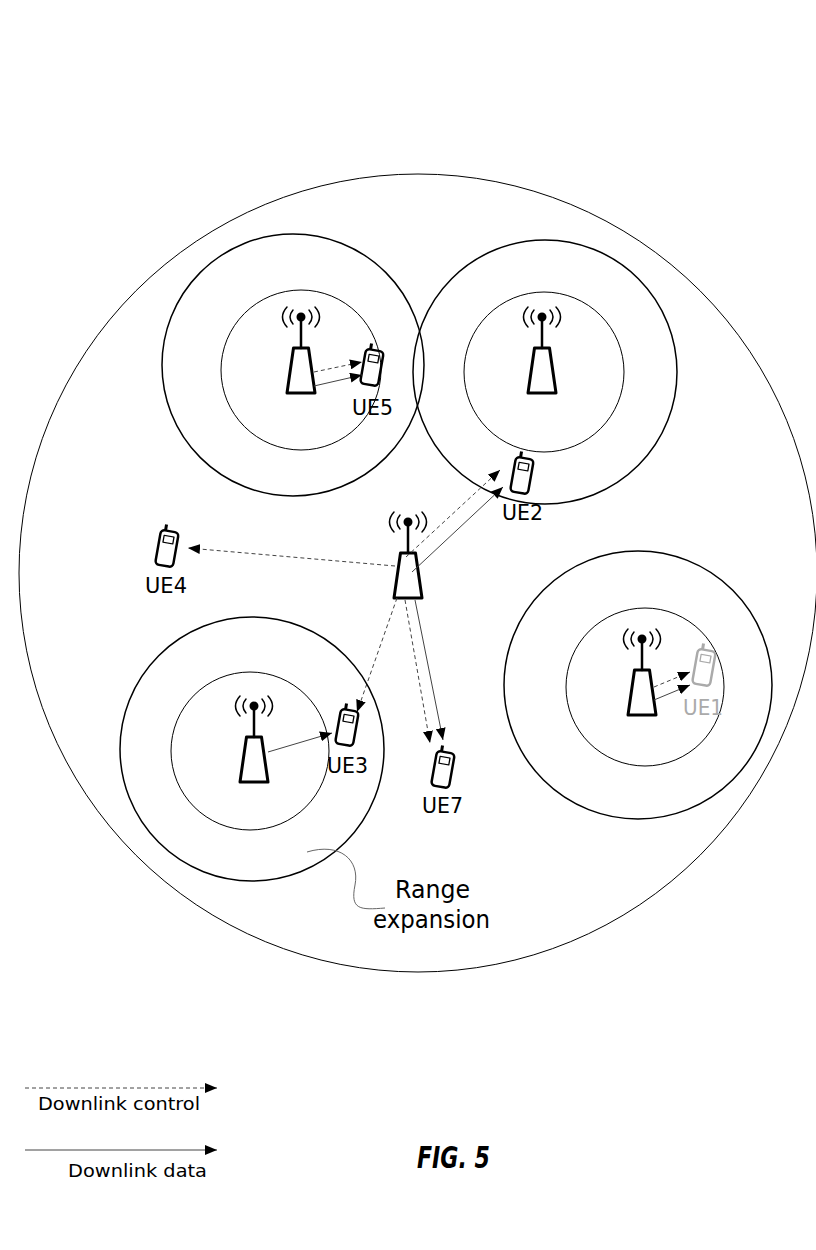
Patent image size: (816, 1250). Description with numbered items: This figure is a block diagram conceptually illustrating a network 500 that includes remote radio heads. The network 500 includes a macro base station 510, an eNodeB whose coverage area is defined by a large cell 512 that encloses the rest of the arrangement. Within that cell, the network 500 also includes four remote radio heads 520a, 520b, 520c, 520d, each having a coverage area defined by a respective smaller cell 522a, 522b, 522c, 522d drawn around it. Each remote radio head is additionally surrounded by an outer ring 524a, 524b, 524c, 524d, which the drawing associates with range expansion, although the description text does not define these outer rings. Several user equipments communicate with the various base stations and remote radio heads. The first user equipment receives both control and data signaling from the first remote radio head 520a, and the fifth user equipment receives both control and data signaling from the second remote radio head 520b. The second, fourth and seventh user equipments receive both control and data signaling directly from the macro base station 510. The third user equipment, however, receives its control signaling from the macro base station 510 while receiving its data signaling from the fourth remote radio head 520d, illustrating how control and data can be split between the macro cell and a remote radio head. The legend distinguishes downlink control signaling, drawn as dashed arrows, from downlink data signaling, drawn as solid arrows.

The network 500 is at (218, 77).
The cell 512 is at (297, 193).
The macro base station 510 is at (427, 580).
The remote radio head 520a is at (630, 700).
The remote radio head 520b is at (288, 377).
The remote radio head 520c is at (528, 375).
The remote radio head 520d is at (240, 767).
The cell 522a is at (608, 612).
The cell 522b is at (248, 303).
The cell 522c is at (517, 297).
The cell 522d is at (223, 673).
The RRH1 range expansion area 524a is at (737, 587).
The RRH2 range expansion area 524b is at (392, 263).
The RRH3 range expansion area 524c is at (513, 242).
The RRH4 range expansion area 524d is at (318, 632).